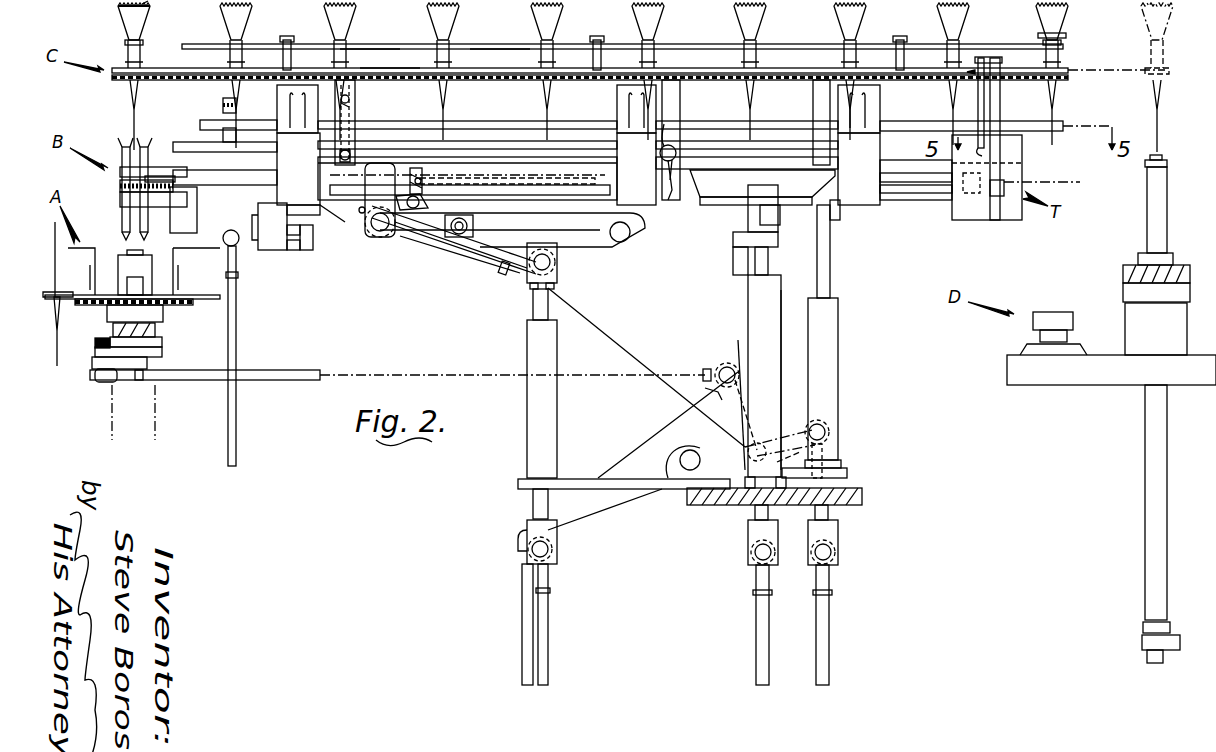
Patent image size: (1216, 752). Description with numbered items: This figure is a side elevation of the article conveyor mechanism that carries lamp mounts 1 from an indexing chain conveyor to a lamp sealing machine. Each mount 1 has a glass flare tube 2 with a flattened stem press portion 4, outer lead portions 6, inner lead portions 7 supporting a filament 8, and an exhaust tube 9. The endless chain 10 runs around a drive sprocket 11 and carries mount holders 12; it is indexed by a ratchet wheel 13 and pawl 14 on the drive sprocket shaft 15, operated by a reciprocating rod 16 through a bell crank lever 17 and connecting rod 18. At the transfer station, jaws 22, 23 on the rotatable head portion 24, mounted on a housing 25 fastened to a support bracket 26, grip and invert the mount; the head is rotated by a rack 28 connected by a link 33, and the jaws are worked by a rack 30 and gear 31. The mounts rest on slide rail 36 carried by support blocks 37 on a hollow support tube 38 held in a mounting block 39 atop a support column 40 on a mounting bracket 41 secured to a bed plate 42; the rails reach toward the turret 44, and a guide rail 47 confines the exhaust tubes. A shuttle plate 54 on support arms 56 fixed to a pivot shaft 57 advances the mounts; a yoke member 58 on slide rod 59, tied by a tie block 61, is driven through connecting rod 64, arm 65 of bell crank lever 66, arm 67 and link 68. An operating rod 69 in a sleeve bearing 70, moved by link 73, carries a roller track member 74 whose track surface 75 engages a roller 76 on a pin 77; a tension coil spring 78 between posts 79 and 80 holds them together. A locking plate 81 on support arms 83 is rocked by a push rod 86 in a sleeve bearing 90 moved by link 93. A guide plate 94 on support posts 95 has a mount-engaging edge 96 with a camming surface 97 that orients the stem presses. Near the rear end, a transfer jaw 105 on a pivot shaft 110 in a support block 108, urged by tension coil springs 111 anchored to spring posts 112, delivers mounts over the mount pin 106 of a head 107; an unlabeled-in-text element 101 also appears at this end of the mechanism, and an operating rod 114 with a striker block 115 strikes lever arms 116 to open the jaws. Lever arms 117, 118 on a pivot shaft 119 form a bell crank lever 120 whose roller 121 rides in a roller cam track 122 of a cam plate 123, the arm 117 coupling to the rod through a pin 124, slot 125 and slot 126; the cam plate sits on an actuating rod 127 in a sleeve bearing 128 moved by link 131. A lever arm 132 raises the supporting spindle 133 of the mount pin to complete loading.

The lamp mount 1 is at (116, 23).
The flare tube 2 is at (141, 56).
The stem press portion 4 is at (124, 42).
The outer lead portions 6 is at (128, 91).
The inner lead portions 7 is at (118, 14).
The filament 8 is at (148, 5).
The exhaust tube 9 is at (132, 116).
The endless chain 10 is at (188, 306).
The drive sprocket 11 is at (164, 312).
The mount holders 12 is at (84, 252).
The ratchet wheel 13 is at (160, 349).
The pawl 14 is at (94, 346).
The drive sprocket shaft 15 is at (152, 374).
The reciprocating rod 16 is at (296, 380).
The bell crank lever 17 is at (806, 415).
The connecting rod 18 is at (830, 445).
The jaw 22 is at (116, 144).
The jaw 23 is at (148, 144).
The rotatable head portion 24 is at (120, 196).
The housing 25 is at (204, 210).
The support bracket 26 is at (286, 253).
The rack 28 is at (222, 105).
The rack 30 is at (154, 180).
The gear 31 is at (174, 190).
The link 33 is at (236, 448).
The slide rail 36 is at (484, 82).
The support blocks 37 is at (298, 222).
The support tube 38 is at (530, 186).
The mounting block 39 is at (748, 240).
The support column 40 is at (732, 266).
The mounting bracket 41 is at (716, 397).
The bed plate 42 is at (708, 508).
The turret 44 is at (1008, 369).
The guide rail 47 is at (254, 120).
The shuttle plate 54 is at (194, 60).
The support arms 56 is at (364, 93).
The pivot shaft 57 is at (512, 141).
The yoke member 58 is at (340, 228).
The slide rod 59 is at (244, 182).
The tie block 61 is at (360, 216).
The connecting rod 64 is at (522, 655).
The arm 65 is at (596, 506).
The bell crank lever 66 is at (650, 452).
The arm 67 is at (612, 330).
The link 68 is at (416, 270).
The operating rod 69 is at (768, 266).
The sleeve bearing 70 is at (746, 318).
The link 73 is at (756, 655).
The roller track member 74 is at (714, 205).
The track surface 75 is at (692, 172).
The roller 76 is at (670, 127).
The pin 77 is at (672, 198).
The tension coil spring 78 is at (354, 111).
The post 79 is at (348, 99).
The post 80 is at (334, 182).
The locking plate 81 is at (378, 66).
The support arms 83 is at (356, 126).
The push rod 86 is at (830, 268).
The sleeve bearing 90 is at (834, 351).
The link 93 is at (828, 655).
The guide plate 94 is at (492, 44).
The support posts 95 is at (292, 38).
The mount-engaging edge 96 is at (382, 44).
The camming surface 97 is at (198, 44).
The bar 101 is at (1055, 120).
The transfer jaw 105 is at (1038, 35).
The mount pin 106 is at (1164, 152).
The head 107 is at (1122, 278).
The support block 108 is at (1016, 152).
The pivot shaft 110 is at (1000, 106).
The tension coil springs 111 is at (990, 66).
The spring posts 112 is at (978, 113).
The operating rod 114 is at (938, 174).
The striker block 115 is at (974, 194).
The lever arms 116 is at (1008, 183).
The lever arm 117 is at (427, 196).
The lever arm 118 is at (414, 250).
The pivot shaft 119 is at (381, 200).
The bell crank lever 120 is at (396, 242).
The roller 121 is at (472, 230).
The roller cam track 122 is at (628, 244).
The cam plate 123 is at (600, 252).
The pin 124 is at (422, 170).
The slot 125 is at (485, 182).
The slot 126 is at (416, 176).
The actuating rod 127 is at (532, 300).
The sleeve bearing 128 is at (526, 456).
The link 131 is at (548, 652).
The lever arm 132 is at (1176, 646).
The supporting spindle 133 is at (1166, 218).